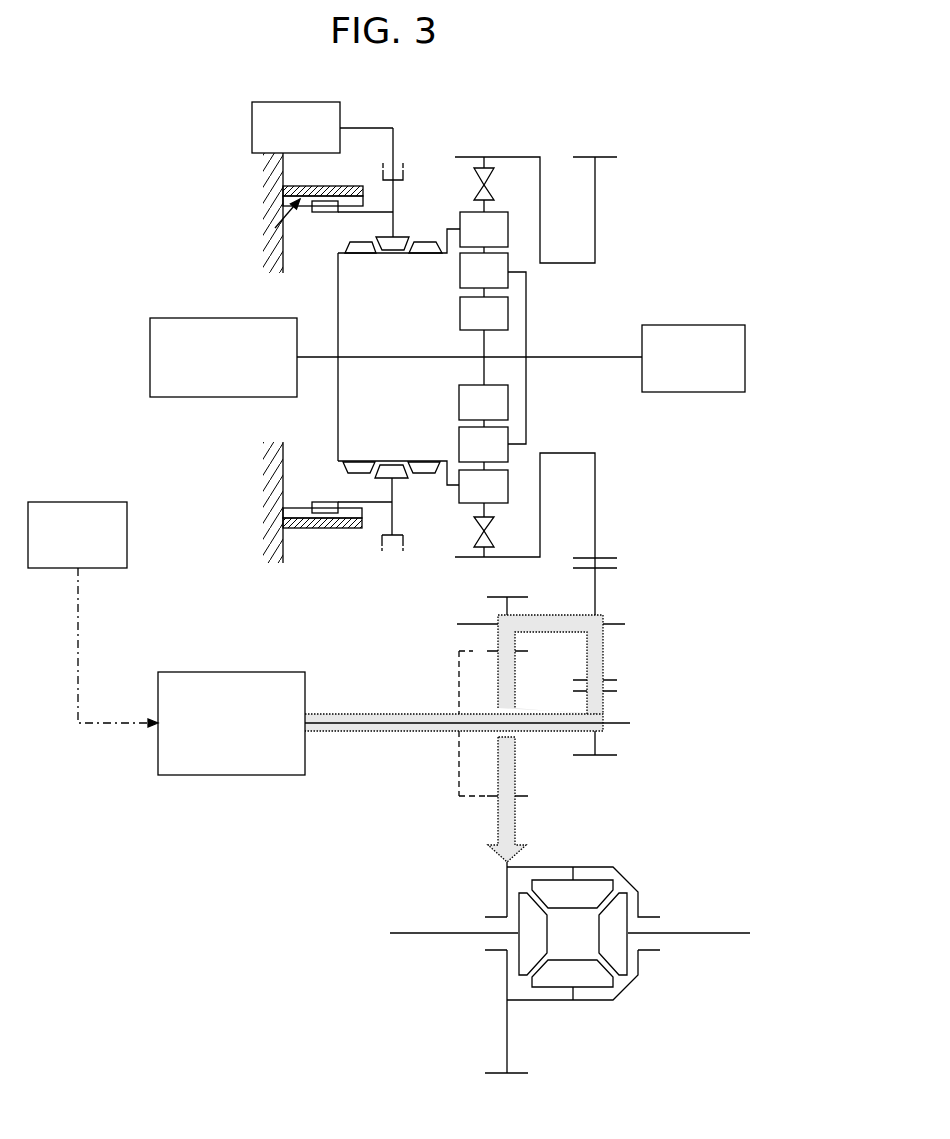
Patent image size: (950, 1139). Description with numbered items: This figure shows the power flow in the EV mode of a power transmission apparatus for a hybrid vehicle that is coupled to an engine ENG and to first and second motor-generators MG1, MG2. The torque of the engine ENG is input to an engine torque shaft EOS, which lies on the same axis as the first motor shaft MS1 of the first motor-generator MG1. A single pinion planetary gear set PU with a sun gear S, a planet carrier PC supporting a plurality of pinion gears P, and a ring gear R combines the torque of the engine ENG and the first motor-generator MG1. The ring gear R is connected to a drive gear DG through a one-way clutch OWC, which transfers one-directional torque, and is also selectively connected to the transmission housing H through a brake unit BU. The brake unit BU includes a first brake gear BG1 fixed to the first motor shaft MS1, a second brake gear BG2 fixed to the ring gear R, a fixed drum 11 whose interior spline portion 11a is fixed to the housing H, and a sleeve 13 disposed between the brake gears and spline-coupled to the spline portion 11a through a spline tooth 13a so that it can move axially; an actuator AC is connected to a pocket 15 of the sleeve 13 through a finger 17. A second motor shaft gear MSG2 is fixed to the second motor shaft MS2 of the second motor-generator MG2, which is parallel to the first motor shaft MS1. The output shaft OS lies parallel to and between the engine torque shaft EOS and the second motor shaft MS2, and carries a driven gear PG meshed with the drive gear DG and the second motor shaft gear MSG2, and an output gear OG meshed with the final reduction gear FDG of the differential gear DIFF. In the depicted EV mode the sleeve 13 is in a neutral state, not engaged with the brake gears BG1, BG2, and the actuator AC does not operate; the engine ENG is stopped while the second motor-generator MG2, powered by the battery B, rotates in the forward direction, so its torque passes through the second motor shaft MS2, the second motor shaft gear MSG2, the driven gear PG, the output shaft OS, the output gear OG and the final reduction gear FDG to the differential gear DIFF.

The actuator AC is at (322, 127).
The transmission housing H is at (268, 262).
The finger 17 is at (393, 140).
The pocket 15 is at (403, 166).
The fixed drum 11 is at (283, 189).
The spline tooth 13a is at (328, 196).
The spline portion 11a is at (275, 228).
The sleeve 13 is at (392, 252).
The first brake gear BG1 is at (359, 254).
The second brake gear BG2 is at (428, 254).
The first motor shaft MS1 is at (386, 360).
The brake unit BU is at (418, 187).
The one-way clutch OWC is at (500, 185).
The planetary gear set PU is at (554, 271).
The ring gear R is at (484, 229).
The pinion gears P is at (484, 270).
The sun gear S is at (484, 313).
The planet carrier PC is at (526, 308).
The engine torque shaft EOS is at (583, 358).
The first motor-generator MG1 is at (223, 357).
The engine ENG is at (693, 358).
The drive gear DG is at (596, 505).
The driven gear PG is at (596, 596).
The second motor shaft gear MSG2 is at (600, 705).
The output gear OG is at (497, 611).
The output shaft OS is at (610, 627).
The second motor shaft MS2 is at (334, 733).
The final reduction gear FDG is at (510, 833).
The second motor-generator MG2 is at (231, 723).
The battery B is at (128, 532).
The differential gear DIFF is at (633, 872).